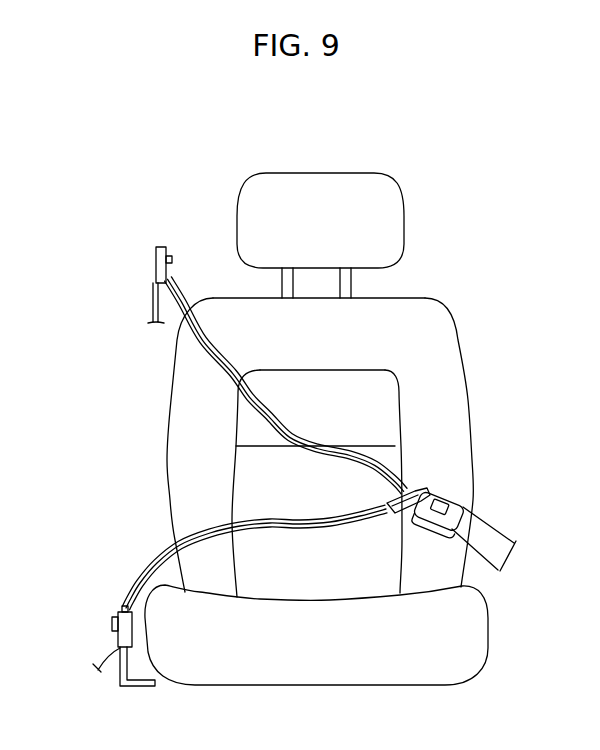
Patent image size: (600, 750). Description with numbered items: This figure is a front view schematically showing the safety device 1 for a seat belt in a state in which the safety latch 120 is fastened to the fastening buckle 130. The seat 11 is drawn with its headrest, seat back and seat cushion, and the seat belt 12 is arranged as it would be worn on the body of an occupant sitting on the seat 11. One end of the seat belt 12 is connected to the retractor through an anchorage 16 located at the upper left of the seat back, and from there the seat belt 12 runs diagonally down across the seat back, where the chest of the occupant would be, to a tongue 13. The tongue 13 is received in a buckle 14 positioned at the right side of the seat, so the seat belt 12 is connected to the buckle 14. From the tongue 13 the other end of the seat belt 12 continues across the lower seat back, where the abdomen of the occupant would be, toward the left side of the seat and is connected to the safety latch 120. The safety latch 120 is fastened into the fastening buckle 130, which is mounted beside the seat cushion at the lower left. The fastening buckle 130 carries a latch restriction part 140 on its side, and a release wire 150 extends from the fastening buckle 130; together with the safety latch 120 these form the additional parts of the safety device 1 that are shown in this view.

The safety device 1 is at (121, 229).
The seat 11 is at (433, 336).
The seat belt 12 is at (378, 467).
The tongue 13 is at (425, 496).
The buckle 14 is at (466, 506).
The anchorage 16 is at (162, 247).
The safety latch 120 is at (123, 607).
The fastening buckle 130 is at (122, 637).
The latch restriction part 140 is at (113, 622).
The release wire 150 is at (105, 657).